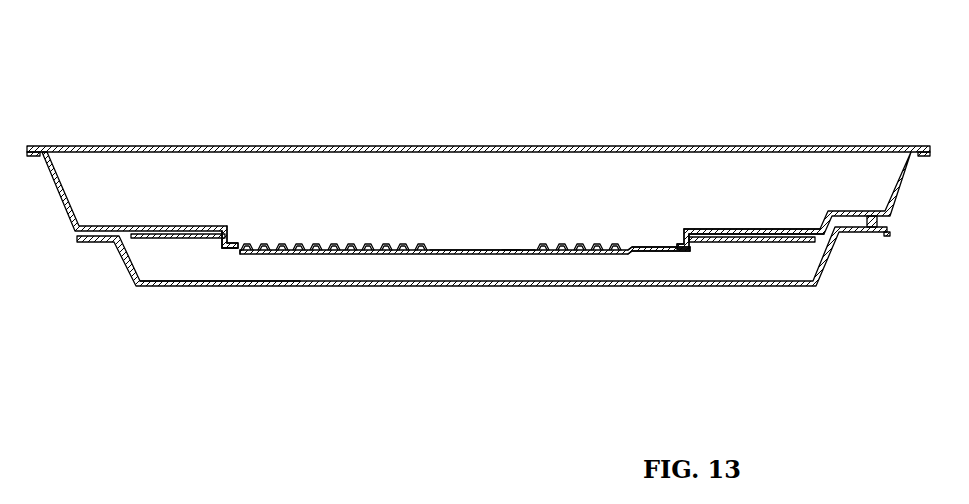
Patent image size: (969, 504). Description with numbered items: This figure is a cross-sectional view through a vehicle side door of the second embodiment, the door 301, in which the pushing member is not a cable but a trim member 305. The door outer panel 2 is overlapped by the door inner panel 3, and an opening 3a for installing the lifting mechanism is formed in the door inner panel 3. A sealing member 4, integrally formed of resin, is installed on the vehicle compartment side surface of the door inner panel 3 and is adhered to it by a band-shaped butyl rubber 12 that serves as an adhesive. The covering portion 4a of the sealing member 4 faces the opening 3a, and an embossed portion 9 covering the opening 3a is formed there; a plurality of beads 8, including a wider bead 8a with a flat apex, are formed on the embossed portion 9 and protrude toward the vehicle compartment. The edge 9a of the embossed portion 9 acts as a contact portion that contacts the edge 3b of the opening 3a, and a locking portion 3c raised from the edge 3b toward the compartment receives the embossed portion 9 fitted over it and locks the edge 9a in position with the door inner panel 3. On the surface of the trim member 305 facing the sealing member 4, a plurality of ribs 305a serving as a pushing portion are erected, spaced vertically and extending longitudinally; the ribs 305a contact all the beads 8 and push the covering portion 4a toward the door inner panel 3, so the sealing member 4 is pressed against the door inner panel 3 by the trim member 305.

The door 301 is at (846, 91).
The door outer panel 2 is at (736, 147).
The door inner panel 3 is at (718, 232).
The opening 3a is at (660, 257).
The edge of the opening 3b is at (240, 240).
The locking portion 3c is at (226, 236).
The sealing member 4 is at (640, 258).
The covering portion 4a is at (447, 256).
The beads 8 is at (320, 254).
The wider bead 8a is at (509, 256).
The embossed portion 9 is at (218, 240).
The edge of the embossed portion 9a is at (236, 255).
The butyl rubber 12 is at (147, 235).
The trim member 305 is at (822, 276).
The ribs 305a is at (222, 272).